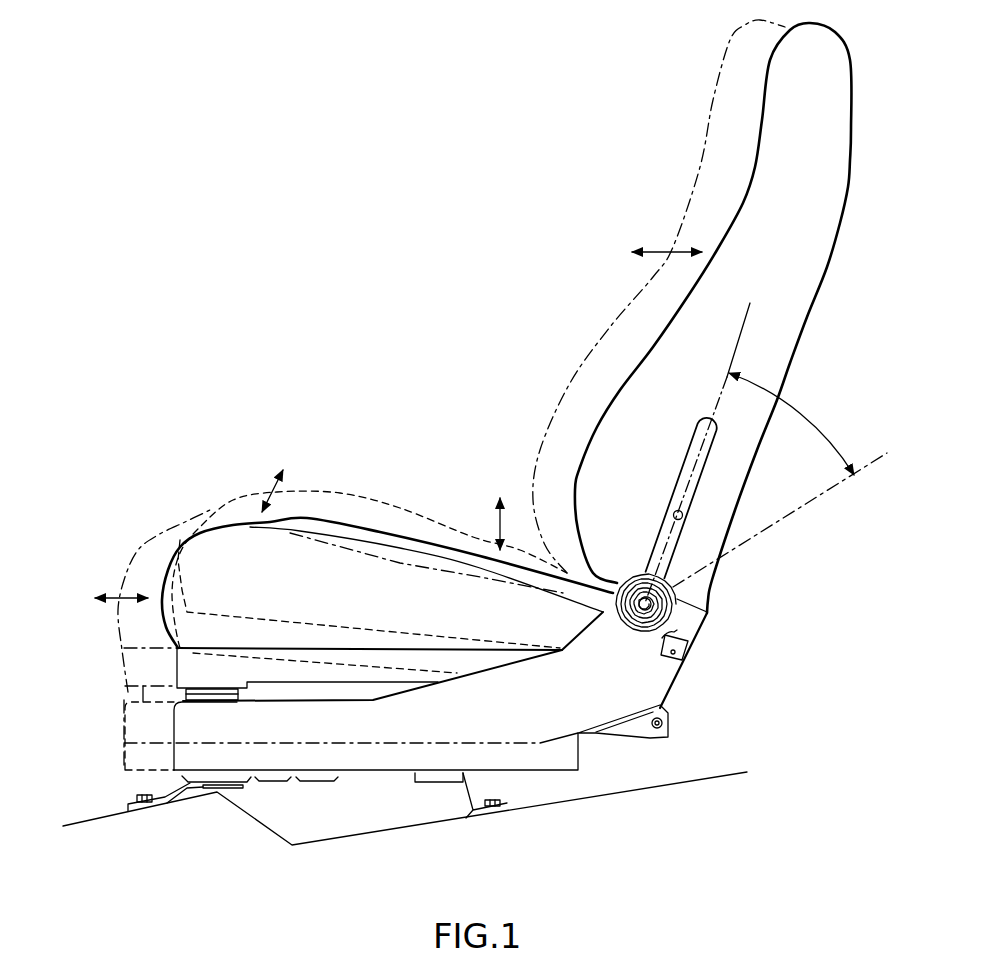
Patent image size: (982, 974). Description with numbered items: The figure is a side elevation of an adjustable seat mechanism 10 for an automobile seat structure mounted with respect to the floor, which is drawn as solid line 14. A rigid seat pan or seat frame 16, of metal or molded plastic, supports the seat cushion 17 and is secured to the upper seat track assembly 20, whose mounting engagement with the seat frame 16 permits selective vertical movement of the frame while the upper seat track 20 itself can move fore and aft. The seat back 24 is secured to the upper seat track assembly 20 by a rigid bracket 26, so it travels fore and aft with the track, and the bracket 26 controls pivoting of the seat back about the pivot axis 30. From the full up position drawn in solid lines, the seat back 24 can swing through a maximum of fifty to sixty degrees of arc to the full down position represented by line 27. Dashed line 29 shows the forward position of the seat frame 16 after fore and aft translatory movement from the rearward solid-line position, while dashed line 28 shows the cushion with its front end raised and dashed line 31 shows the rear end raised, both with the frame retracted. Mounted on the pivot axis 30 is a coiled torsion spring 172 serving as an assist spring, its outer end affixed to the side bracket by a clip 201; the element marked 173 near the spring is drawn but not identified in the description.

The adjustable seat mechanism 10 is at (692, 702).
The floor 14 is at (615, 793).
The seat pan or seat frame 16 is at (178, 657).
The seat cushion 17 is at (358, 557).
The upper seat track assembly 20 is at (193, 700).
The seat back 24 is at (727, 488).
The rigid bracket 26 is at (655, 535).
The line representing full down position 27 is at (843, 481).
The dashed line showing front end raised condition 28 is at (217, 503).
The dashed line showing forward position 29 is at (700, 167).
The pivot axis 30 is at (660, 598).
The dashed line showing rear end raised condition 31 is at (463, 530).
The coiled torsion spring 172 is at (655, 612).
The hinge strut 173 is at (645, 634).
The clip 201 is at (688, 648).